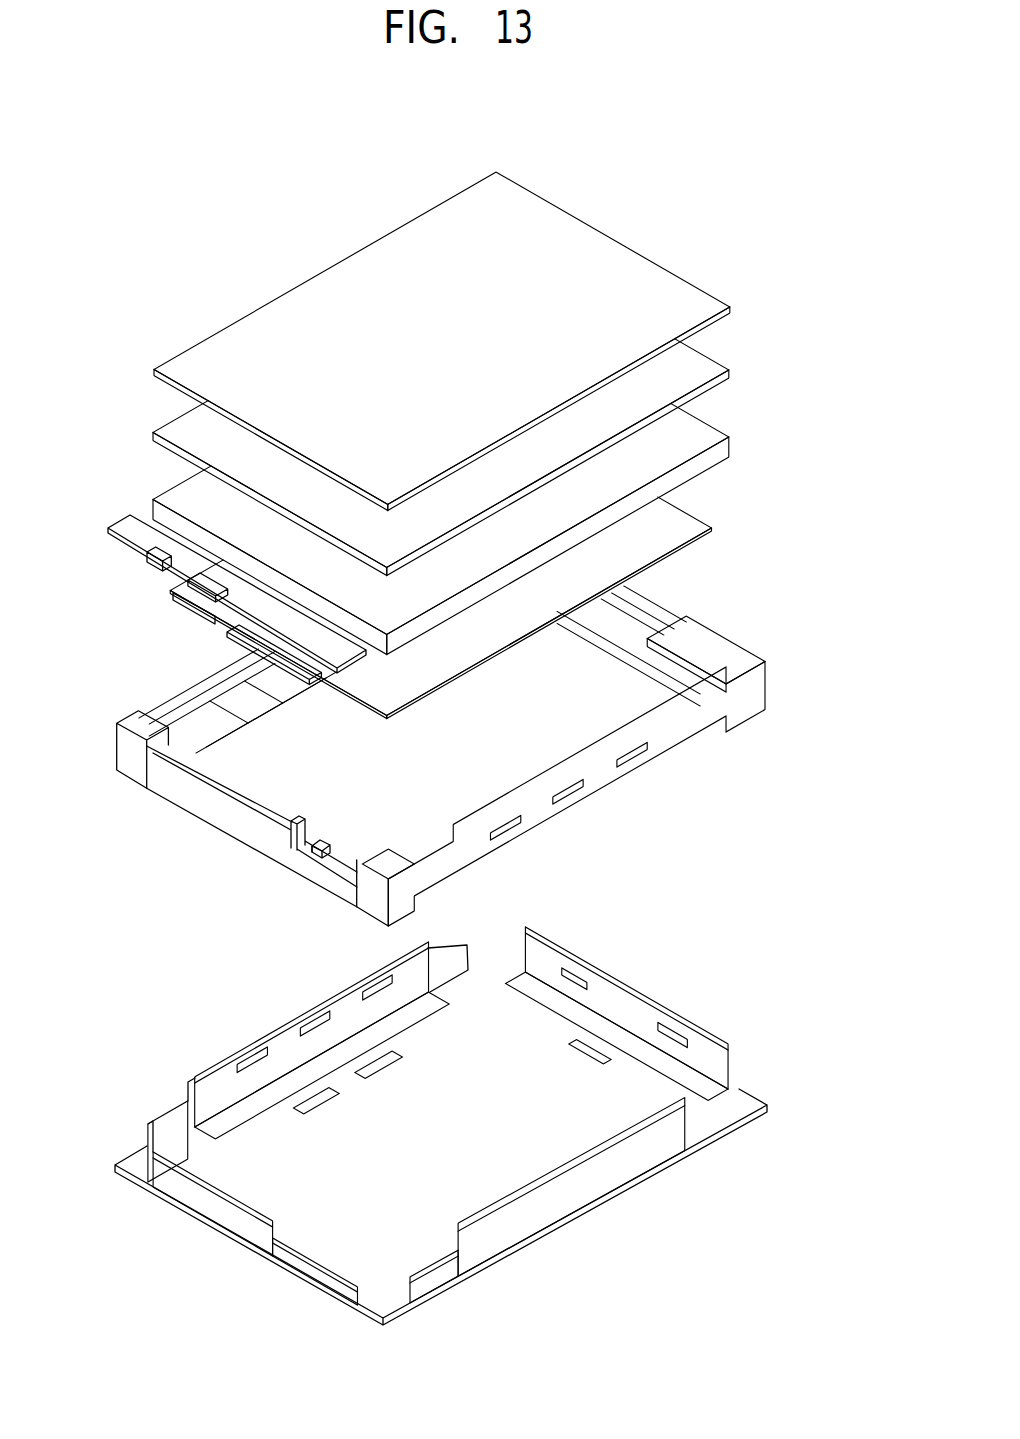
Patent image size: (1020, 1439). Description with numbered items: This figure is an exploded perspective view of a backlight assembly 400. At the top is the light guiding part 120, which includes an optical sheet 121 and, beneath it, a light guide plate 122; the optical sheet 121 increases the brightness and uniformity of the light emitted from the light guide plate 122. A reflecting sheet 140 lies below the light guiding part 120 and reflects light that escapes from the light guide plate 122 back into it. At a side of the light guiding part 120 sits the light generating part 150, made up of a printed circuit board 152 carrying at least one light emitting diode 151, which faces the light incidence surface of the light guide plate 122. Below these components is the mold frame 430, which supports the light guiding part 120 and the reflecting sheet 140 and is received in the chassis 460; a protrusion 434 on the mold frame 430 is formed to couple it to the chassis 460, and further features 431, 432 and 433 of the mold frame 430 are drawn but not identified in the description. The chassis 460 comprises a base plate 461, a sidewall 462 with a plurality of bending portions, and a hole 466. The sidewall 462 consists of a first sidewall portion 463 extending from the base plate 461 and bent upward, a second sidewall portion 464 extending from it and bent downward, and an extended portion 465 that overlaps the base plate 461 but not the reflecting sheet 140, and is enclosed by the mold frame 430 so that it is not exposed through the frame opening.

The backlight assembly 400 is at (277, 257).
The light guiding part 120 is at (796, 352).
The optical sheet 121 is at (731, 311).
The light guide plate 122 is at (731, 443).
The reflecting sheet 140 is at (713, 529).
The light generating part 150 is at (100, 618).
The light emitting diode 151 is at (150, 562).
The printed circuit board 152 is at (133, 530).
The mold frame 430 is at (712, 610).
The protrusion 431 is at (310, 832).
The seating groove 432 is at (190, 724).
The coupling hole 433 is at (596, 778).
The protrusion 434 is at (637, 757).
The chassis 460 is at (698, 966).
The base plate 461 is at (537, 1117).
The sidewall 462 is at (245, 1038).
The first sidewall portion 463 is at (188, 1085).
The second sidewall portion 464 is at (190, 1092).
The extended portion 465 is at (355, 1043).
The hole 466 is at (320, 1032).